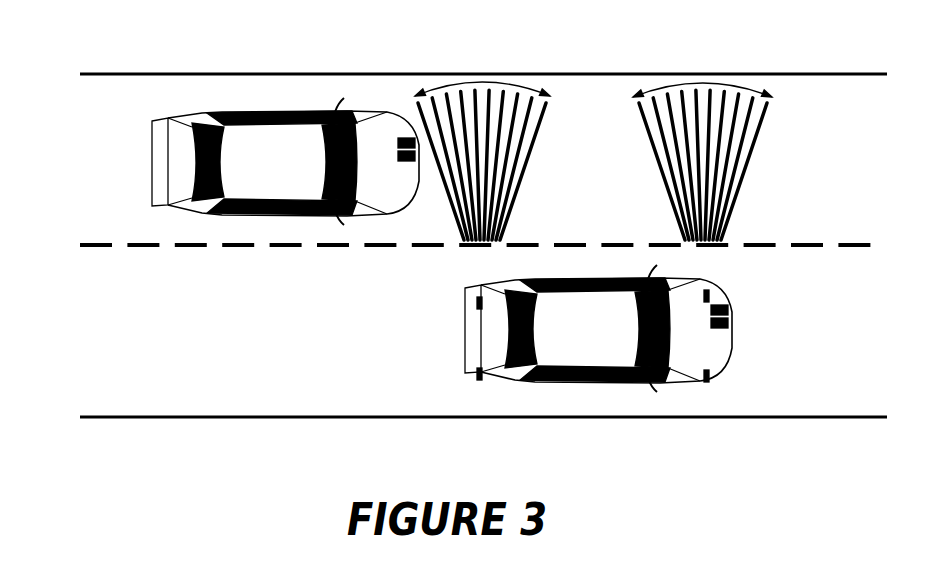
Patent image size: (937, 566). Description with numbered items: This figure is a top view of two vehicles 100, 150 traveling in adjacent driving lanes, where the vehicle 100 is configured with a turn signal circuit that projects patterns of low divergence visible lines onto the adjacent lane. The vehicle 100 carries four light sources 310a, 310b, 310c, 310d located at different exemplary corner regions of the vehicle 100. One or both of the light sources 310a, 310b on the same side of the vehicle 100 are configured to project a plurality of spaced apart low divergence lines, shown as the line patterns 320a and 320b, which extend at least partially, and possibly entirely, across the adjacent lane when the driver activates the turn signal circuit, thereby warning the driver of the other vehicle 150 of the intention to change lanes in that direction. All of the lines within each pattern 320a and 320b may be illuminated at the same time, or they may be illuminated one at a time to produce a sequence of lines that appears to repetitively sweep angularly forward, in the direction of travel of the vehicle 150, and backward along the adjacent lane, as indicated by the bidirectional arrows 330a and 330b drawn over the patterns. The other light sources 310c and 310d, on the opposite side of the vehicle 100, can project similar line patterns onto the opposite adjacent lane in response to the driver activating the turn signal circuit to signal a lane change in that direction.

The vehicle 100 is at (404, 336).
The vehicle 150 is at (120, 166).
The light source 310a is at (476, 298).
The light source 310b is at (711, 295).
The light source 310c is at (476, 376).
The light source 310d is at (711, 382).
The line pattern 320a is at (533, 184).
The line pattern 320b is at (756, 184).
The bidirectional arrow 330a is at (423, 93).
The bidirectional arrow 330b is at (657, 90).